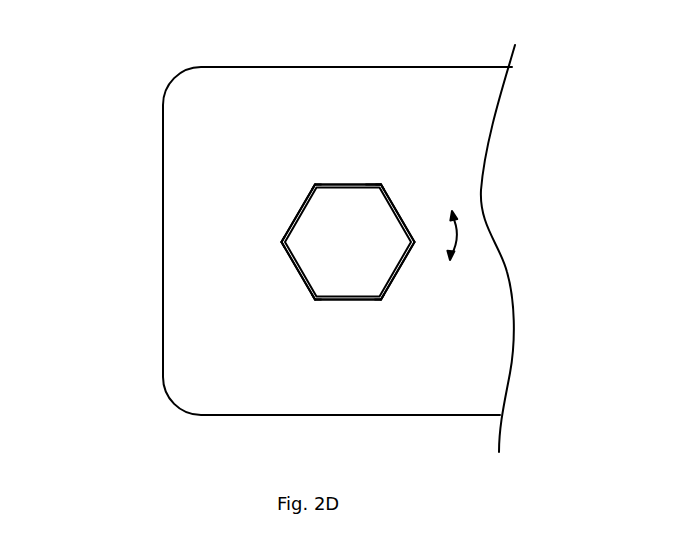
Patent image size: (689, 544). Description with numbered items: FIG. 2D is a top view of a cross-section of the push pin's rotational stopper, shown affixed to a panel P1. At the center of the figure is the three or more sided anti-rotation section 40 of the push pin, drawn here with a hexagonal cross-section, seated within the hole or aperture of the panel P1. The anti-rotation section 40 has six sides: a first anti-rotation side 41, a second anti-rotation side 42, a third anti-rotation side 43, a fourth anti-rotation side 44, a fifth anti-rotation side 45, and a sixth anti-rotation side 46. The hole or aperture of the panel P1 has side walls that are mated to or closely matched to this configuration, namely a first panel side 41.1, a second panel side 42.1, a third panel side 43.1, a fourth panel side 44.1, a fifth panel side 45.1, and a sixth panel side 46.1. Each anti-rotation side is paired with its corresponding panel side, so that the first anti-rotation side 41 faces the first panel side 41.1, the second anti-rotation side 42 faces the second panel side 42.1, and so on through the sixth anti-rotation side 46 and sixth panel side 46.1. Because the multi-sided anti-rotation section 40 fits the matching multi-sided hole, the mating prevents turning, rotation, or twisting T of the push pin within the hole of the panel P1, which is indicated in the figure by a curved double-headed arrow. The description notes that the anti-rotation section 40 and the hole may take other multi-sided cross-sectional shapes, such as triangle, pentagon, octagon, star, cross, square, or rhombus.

The panel P1 is at (225, 97).
The three or more sided anti-rotation section 40 is at (393, 223).
The first anti-rotation side 41 is at (386, 213).
The first panel side 41.1 is at (383, 187).
The second anti-rotation side 42 is at (393, 270).
The second panel side 42.1 is at (397, 274).
The third anti-rotation side 43 is at (347, 290).
The third panel side 43.1 is at (340, 298).
The fourth anti-rotation side 44 is at (310, 278).
The fourth panel side 44.1 is at (287, 258).
The fifth anti-rotation side 45 is at (304, 215).
The fifth panel side 45.1 is at (313, 186).
The sixth anti-rotation side 46 is at (353, 194).
The sixth panel side 46.1 is at (373, 184).
The turning, rotation, or twisting T is at (459, 240).